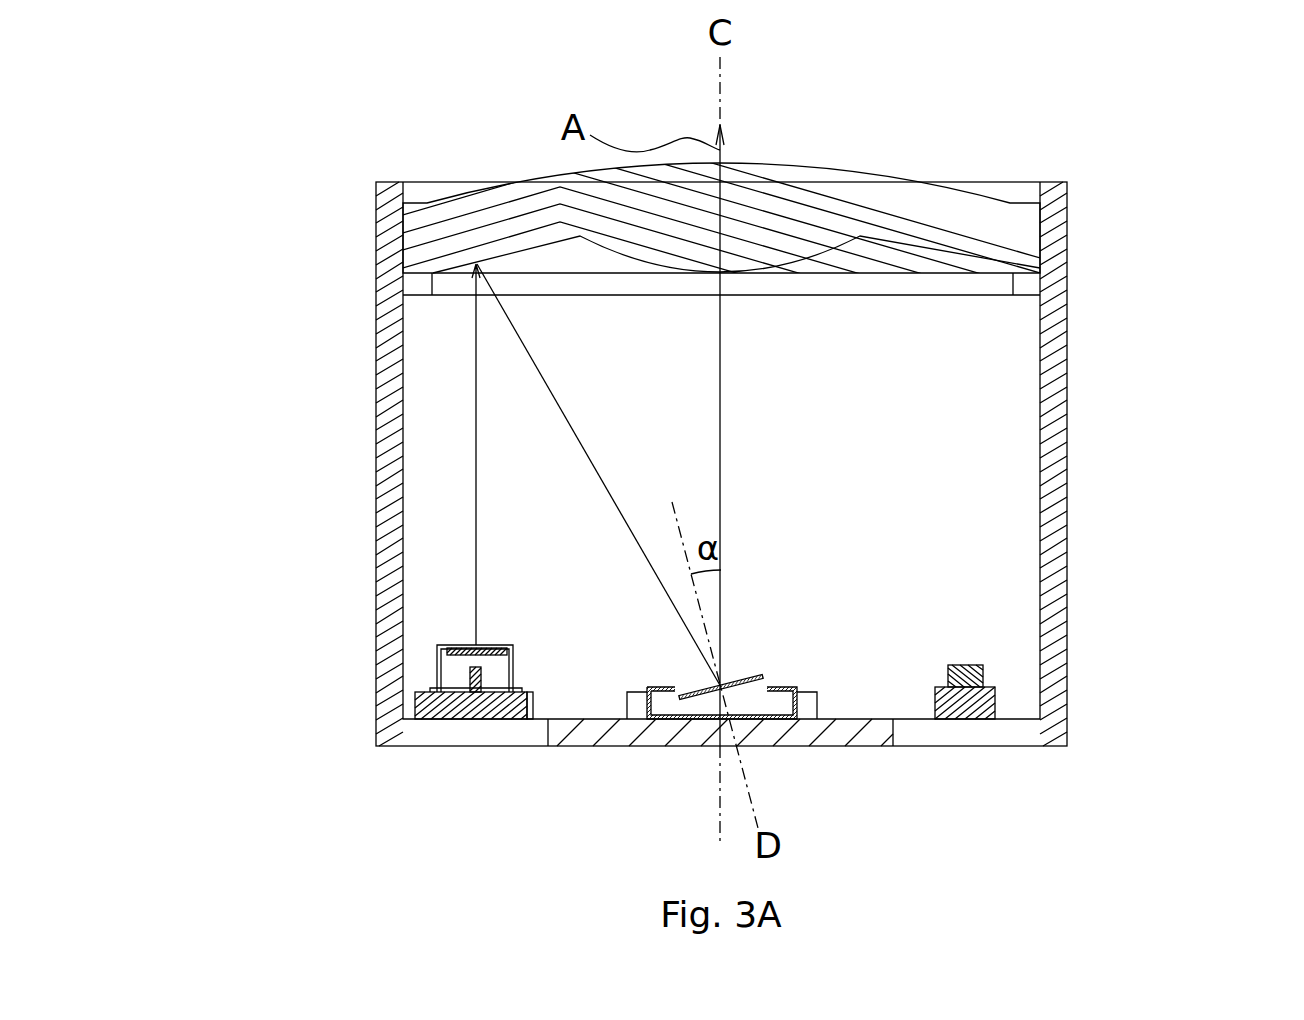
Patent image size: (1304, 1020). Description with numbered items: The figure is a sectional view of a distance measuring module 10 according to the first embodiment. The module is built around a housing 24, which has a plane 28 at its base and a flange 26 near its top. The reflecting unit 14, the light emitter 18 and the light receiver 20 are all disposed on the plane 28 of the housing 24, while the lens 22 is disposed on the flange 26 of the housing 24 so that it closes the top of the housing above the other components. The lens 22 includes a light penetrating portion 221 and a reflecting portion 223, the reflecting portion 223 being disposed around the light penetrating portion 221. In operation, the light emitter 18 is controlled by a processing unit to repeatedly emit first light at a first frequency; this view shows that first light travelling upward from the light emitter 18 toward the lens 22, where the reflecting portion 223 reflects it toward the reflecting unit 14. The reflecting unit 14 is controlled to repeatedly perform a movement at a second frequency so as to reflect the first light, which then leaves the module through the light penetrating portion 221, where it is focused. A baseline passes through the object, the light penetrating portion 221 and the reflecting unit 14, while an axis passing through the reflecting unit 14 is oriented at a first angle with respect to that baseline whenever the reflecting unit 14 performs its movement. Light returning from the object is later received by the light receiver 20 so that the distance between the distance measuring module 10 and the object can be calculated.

The distance measuring module 10 is at (153, 85).
The reflecting unit 14 is at (718, 697).
The light emitter 18 is at (465, 676).
The light receiver 20 is at (970, 703).
The lens 22 is at (736, 240).
The light penetrating portion 221 is at (787, 207).
The reflecting portion 223 is at (453, 236).
The housing 24 is at (1050, 525).
The flange 26 is at (1014, 290).
The plane 28 is at (867, 719).